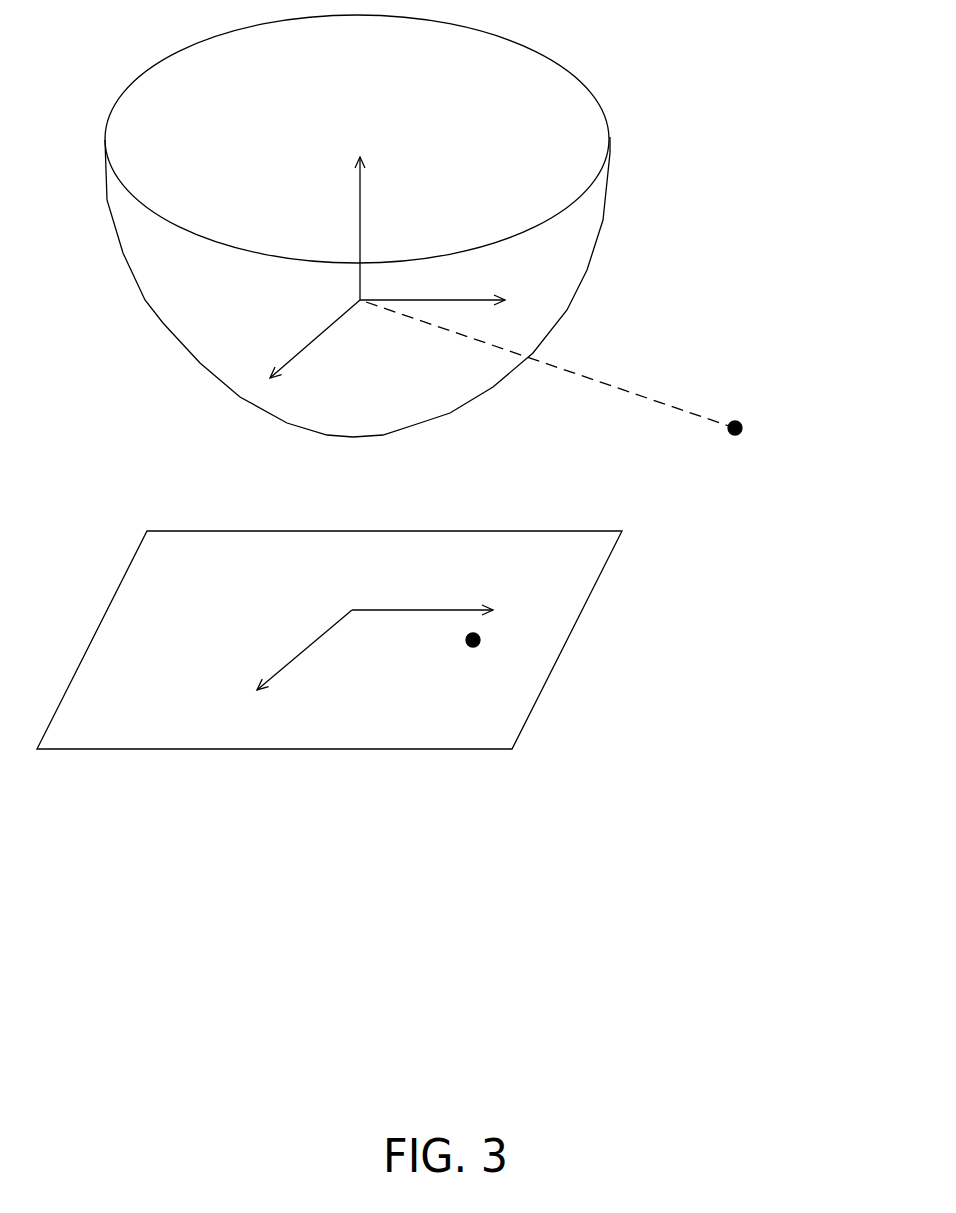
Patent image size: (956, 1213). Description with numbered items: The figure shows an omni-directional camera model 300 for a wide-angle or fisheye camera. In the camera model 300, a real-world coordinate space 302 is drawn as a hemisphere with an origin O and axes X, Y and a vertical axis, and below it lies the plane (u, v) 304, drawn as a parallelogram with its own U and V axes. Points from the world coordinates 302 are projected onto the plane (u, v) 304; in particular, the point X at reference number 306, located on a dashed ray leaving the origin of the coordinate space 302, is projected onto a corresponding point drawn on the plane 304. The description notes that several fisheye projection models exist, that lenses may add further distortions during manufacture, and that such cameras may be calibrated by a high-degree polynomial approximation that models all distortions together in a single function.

The omni-directional camera model 300 is at (436, 570).
The real-world coordinate space 302 is at (608, 72).
The plane (u, v) 304 is at (608, 635).
The point X 306 is at (738, 413).